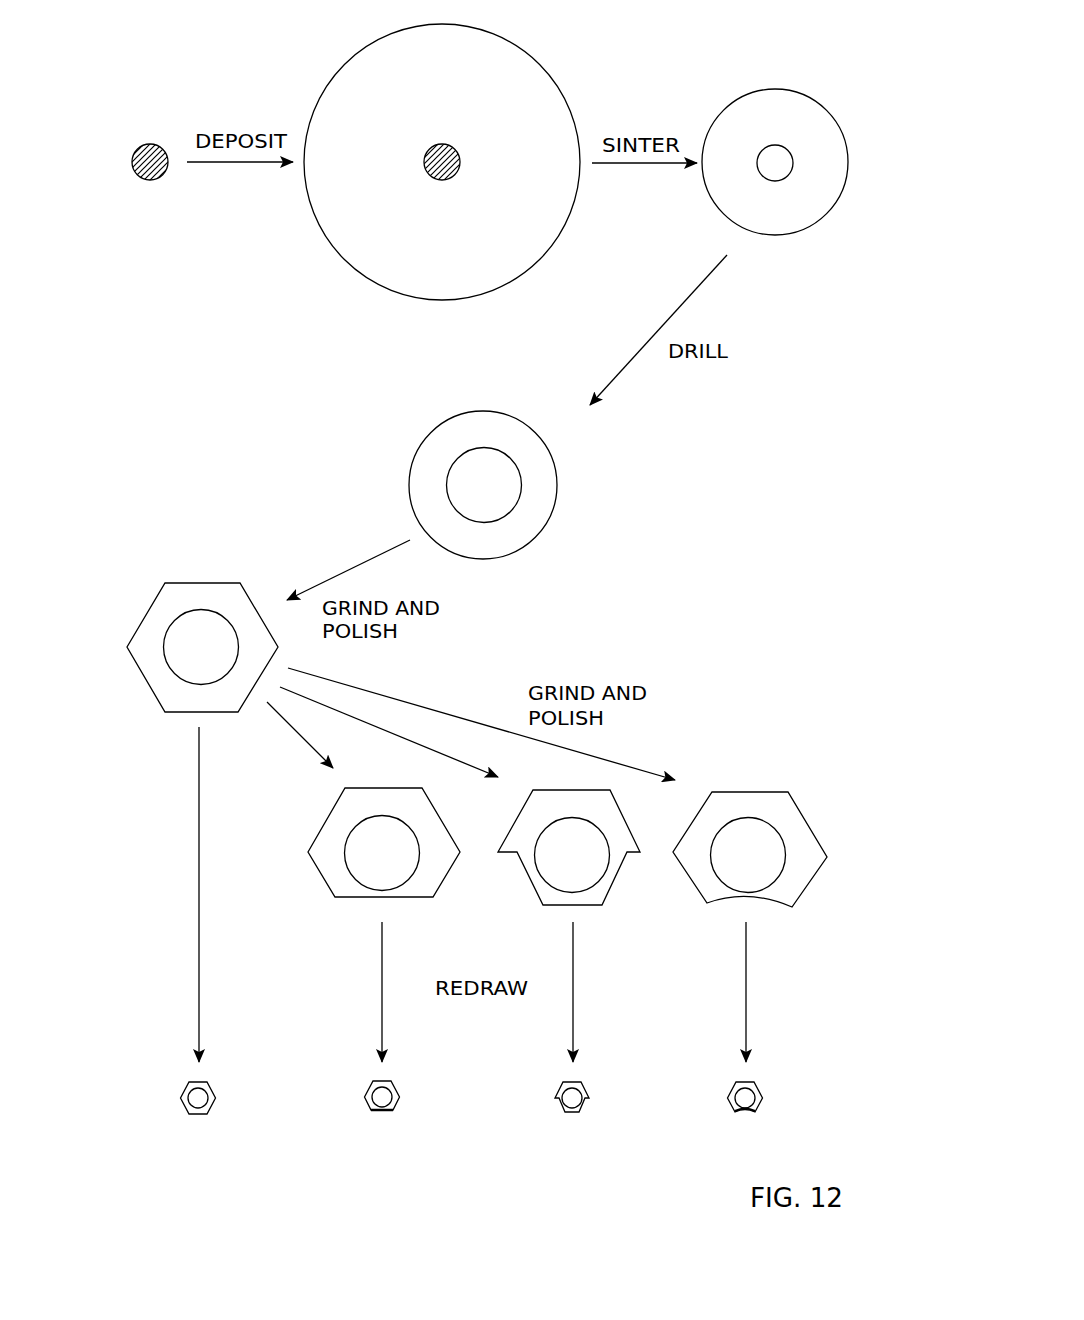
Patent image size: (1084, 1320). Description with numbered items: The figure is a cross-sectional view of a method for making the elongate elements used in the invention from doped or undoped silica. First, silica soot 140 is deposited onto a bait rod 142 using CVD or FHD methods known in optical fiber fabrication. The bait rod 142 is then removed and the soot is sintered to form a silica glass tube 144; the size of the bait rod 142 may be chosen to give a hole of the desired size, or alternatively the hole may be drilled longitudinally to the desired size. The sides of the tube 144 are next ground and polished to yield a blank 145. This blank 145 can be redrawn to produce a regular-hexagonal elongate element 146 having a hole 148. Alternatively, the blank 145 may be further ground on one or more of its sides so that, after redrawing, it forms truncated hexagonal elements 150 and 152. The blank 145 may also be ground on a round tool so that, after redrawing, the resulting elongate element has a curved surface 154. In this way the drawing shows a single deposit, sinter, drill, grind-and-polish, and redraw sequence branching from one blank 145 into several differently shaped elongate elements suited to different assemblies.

The silica soot 140 is at (342, 212).
The bait rod 142 is at (137, 180).
The silica glass tube 144 is at (762, 115).
The blank 145 is at (207, 590).
The regular-hexagonal elongate element 146 is at (185, 1118).
The hole 148 is at (202, 1097).
The truncated hexagonal element 150 is at (368, 1115).
The truncated hexagonal element 152 is at (555, 1115).
The curved surface 154 is at (730, 1115).